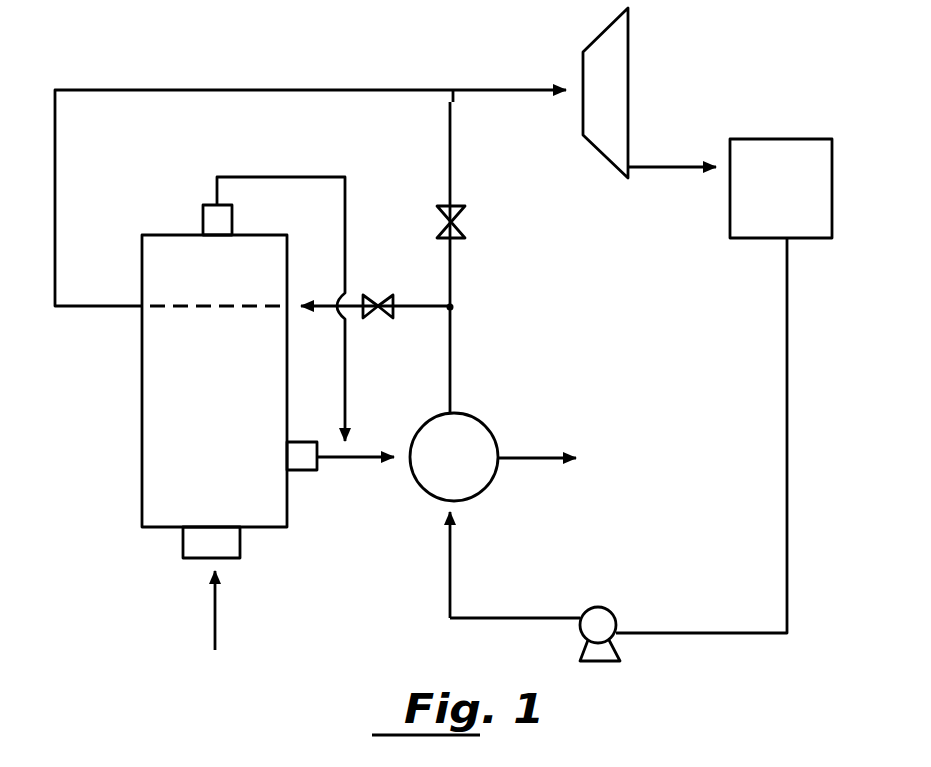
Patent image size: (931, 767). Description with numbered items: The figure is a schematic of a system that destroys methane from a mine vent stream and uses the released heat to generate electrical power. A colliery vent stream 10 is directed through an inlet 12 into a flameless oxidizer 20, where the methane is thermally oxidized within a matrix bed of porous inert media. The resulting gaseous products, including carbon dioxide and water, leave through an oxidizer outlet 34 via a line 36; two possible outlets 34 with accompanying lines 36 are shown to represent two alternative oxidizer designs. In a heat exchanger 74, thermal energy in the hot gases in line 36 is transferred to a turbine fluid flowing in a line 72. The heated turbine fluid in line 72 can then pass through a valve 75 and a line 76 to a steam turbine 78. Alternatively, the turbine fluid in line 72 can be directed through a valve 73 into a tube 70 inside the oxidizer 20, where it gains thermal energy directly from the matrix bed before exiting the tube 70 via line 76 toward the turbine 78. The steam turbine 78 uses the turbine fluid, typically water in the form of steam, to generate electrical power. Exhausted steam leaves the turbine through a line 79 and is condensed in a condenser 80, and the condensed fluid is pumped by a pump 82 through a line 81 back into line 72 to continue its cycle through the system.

The colliery vent stream 10 is at (213, 610).
The inlet 12 is at (240, 545).
The flameless oxidizer 20 is at (230, 406).
The oxidizer outlet 34 is at (207, 215).
The line 36 is at (347, 218).
The tube 70 is at (185, 308).
The line 72 is at (452, 360).
The valve 73 is at (387, 318).
The heat exchanger 74 is at (484, 437).
The valve 75 is at (465, 222).
The line 76 is at (495, 90).
The steam turbine 78 is at (630, 45).
The line 79 is at (680, 168).
The condenser 80 is at (792, 145).
The line 81 is at (789, 465).
The pump 82 is at (606, 615).